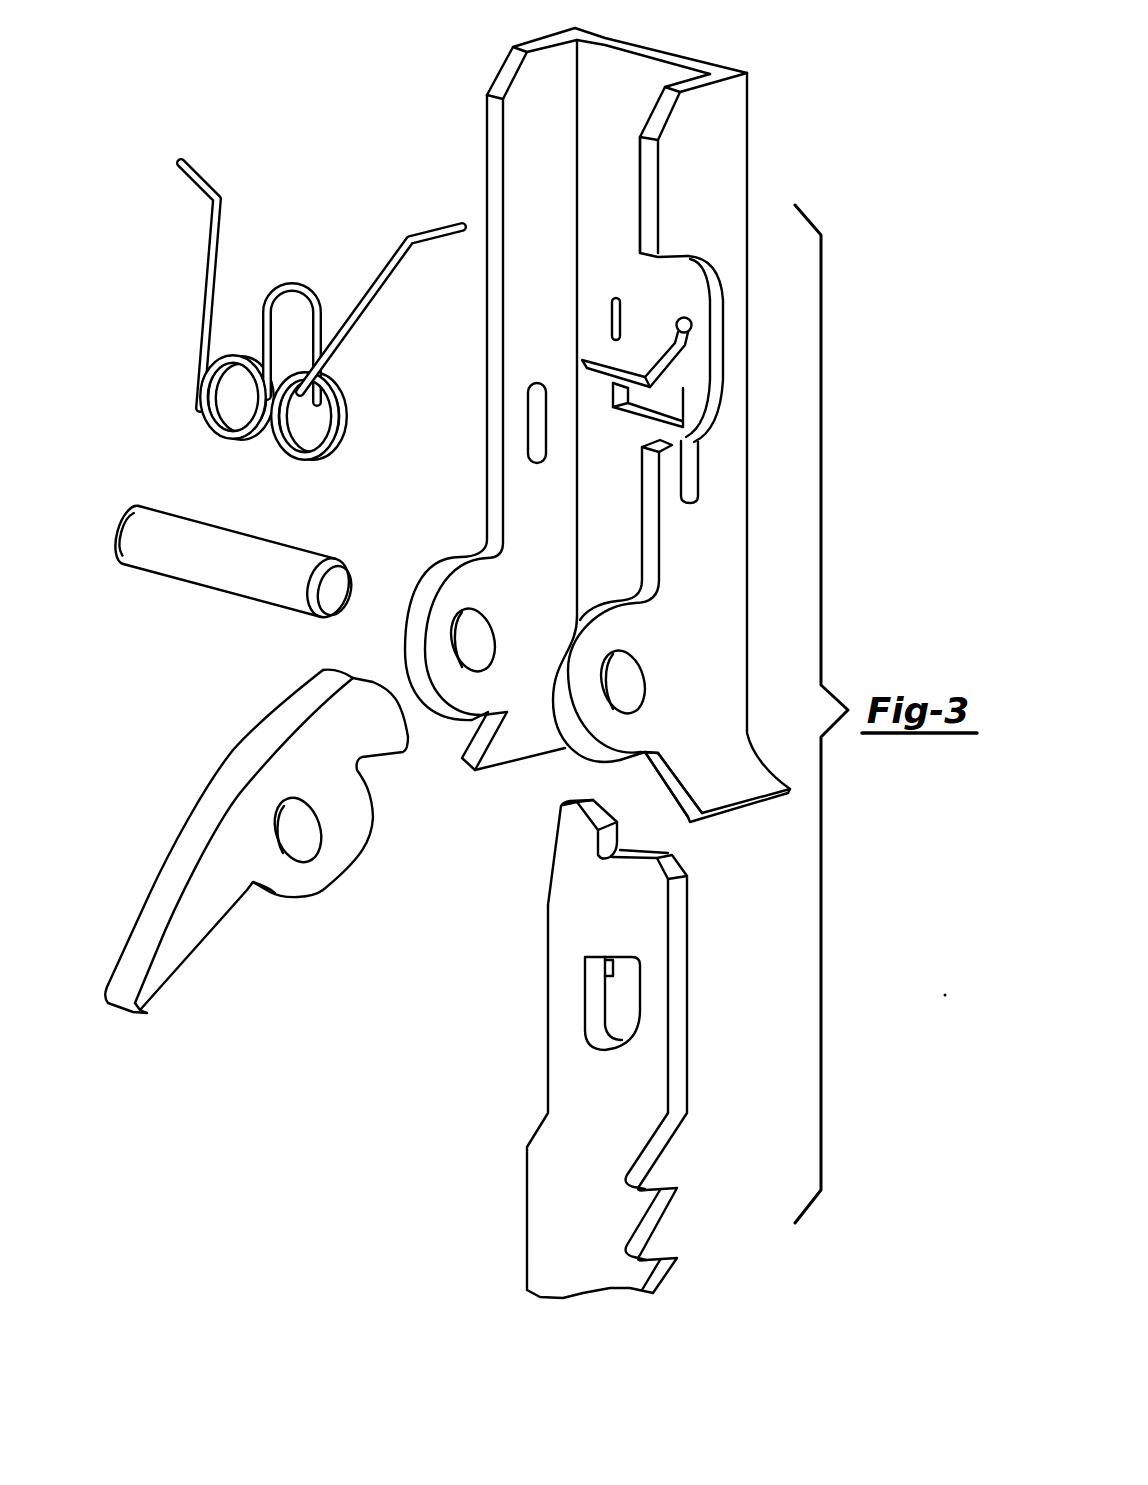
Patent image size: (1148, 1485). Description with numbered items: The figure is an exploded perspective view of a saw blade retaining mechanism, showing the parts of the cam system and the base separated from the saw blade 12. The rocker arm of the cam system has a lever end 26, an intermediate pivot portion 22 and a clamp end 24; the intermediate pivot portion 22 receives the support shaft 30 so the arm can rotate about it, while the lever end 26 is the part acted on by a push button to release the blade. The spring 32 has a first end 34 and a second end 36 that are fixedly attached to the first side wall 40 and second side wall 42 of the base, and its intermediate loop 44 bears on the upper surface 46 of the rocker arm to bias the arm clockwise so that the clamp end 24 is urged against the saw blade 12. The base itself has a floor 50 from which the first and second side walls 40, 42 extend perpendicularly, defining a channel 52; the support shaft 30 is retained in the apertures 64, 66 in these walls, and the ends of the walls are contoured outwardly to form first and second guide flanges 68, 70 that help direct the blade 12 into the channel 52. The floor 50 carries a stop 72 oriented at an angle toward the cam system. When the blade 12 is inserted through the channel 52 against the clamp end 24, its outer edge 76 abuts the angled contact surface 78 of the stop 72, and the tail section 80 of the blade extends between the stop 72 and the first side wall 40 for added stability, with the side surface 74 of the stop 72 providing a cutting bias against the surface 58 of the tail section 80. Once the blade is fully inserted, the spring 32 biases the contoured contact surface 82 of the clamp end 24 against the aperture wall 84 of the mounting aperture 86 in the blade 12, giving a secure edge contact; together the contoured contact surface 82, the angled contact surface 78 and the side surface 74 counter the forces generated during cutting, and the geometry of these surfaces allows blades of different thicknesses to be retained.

The saw blade 12 is at (586, 1049).
The intermediate pivot portion 22 is at (256, 822).
The clamp end 24 is at (292, 688).
The lever end 26 is at (127, 973).
The support shaft 30 is at (191, 530).
The spring 32 is at (297, 280).
The first end 34 is at (183, 160).
The second end 36 is at (450, 223).
The first side wall 40 is at (561, 439).
The second side wall 42 is at (648, 182).
The intermediate loop 44 is at (288, 279).
The upper surface 46 is at (233, 752).
The floor 50 is at (663, 469).
The channel 52 is at (607, 455).
The surface 58 is at (608, 838).
The aperture 64 is at (617, 676).
The aperture 66 is at (467, 640).
The first guide flange 68 is at (518, 750).
The second guide flange 70 is at (733, 788).
The stop 72 is at (612, 363).
The side surface 74 is at (594, 341).
The outer edge 76 is at (650, 852).
The angled contact surface 78 is at (675, 382).
The tail section 80 is at (574, 838).
The contoured contact surface 82 is at (375, 680).
The aperture wall 84 is at (608, 980).
The mounting aperture 86 is at (617, 1017).